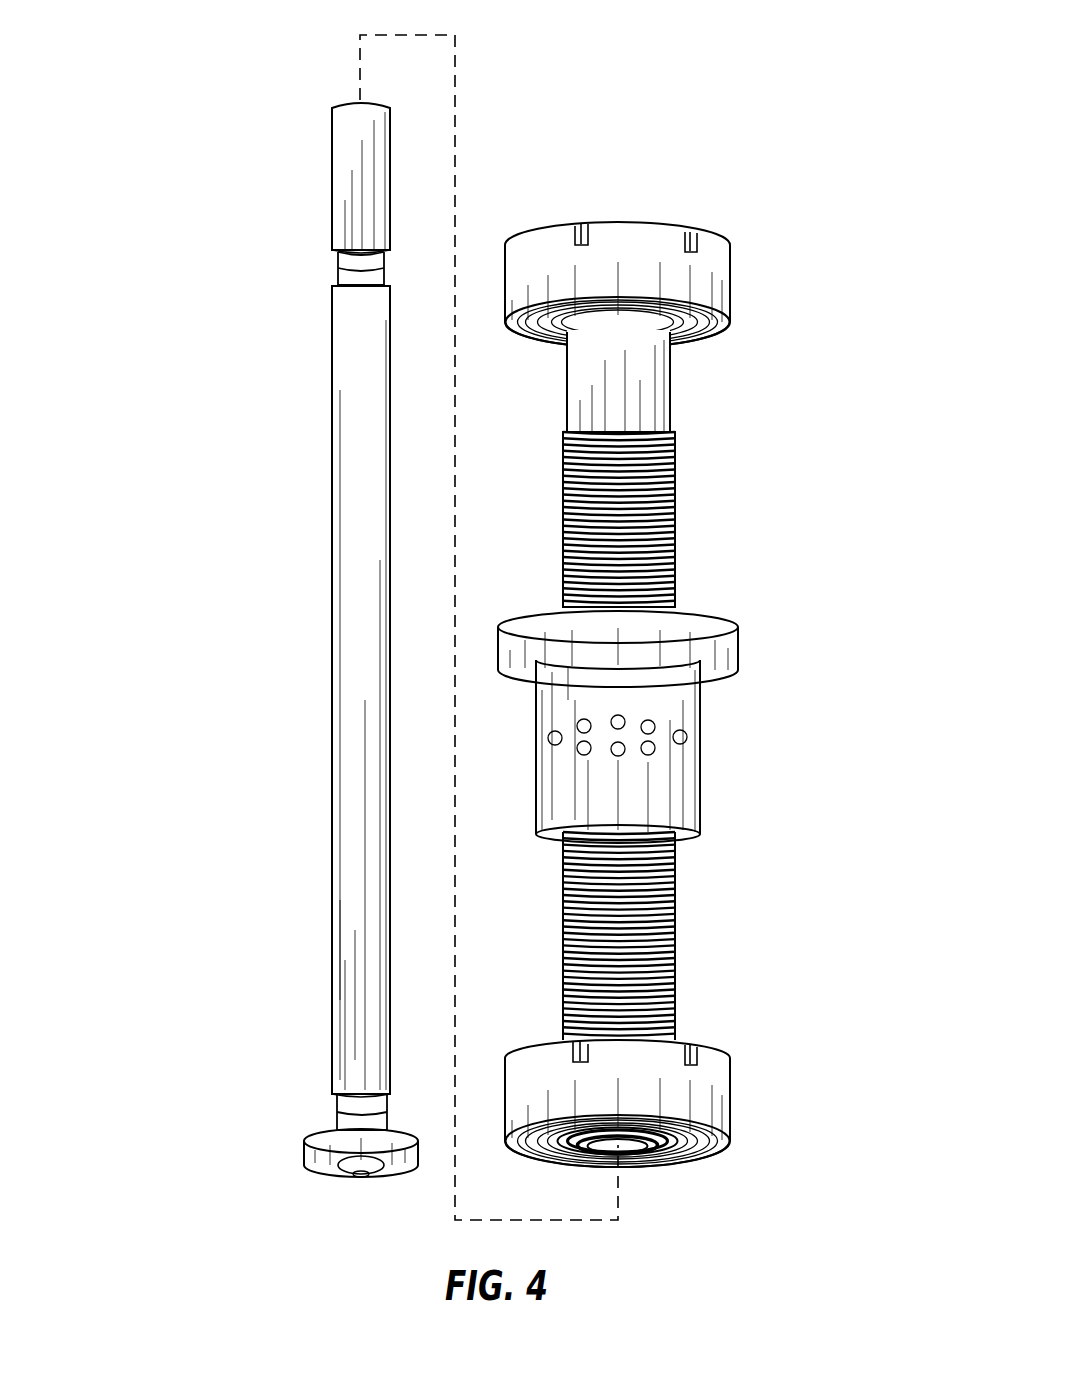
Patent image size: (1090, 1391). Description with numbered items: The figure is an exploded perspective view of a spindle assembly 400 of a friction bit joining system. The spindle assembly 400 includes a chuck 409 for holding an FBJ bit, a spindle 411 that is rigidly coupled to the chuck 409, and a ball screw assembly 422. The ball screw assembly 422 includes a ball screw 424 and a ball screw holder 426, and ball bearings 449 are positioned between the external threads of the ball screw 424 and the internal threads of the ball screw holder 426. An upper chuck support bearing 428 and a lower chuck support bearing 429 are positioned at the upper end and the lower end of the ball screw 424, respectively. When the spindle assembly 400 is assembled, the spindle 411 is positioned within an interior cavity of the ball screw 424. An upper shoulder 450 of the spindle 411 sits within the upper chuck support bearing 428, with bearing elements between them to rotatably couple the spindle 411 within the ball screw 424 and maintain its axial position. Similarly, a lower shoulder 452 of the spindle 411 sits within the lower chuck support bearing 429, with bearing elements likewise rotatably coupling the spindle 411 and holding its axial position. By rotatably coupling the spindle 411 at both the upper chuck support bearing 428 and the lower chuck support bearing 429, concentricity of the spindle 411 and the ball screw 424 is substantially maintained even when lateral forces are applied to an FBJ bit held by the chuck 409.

The spindle assembly 400 is at (127, 92).
The spindle 411 is at (247, 475).
The upper shoulder 450 is at (318, 272).
The lower shoulder 452 is at (319, 1108).
The chuck 409 is at (296, 1168).
The ball screw assembly 422 is at (733, 694).
The upper chuck support bearing 428 is at (748, 280).
The ball screw holder 426 is at (752, 654).
The ball bearings 449 is at (694, 737).
The ball screw 424 is at (683, 912).
The lower chuck support bearing 429 is at (748, 1106).